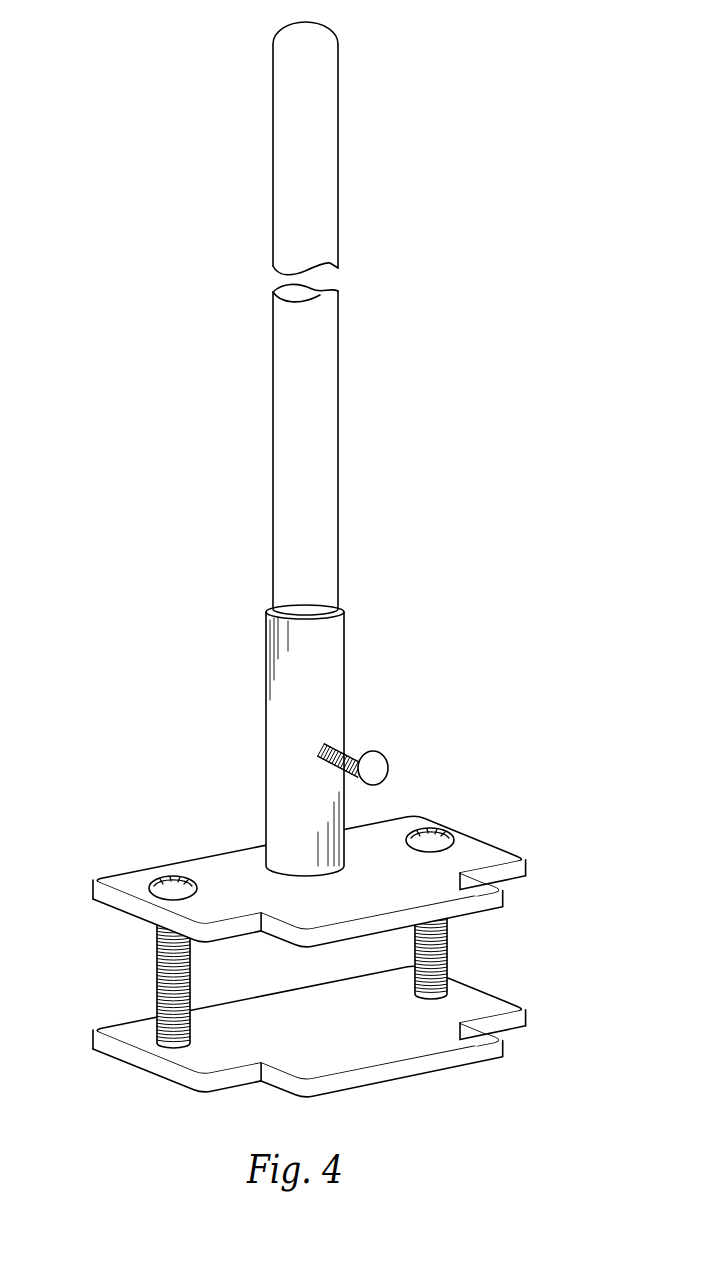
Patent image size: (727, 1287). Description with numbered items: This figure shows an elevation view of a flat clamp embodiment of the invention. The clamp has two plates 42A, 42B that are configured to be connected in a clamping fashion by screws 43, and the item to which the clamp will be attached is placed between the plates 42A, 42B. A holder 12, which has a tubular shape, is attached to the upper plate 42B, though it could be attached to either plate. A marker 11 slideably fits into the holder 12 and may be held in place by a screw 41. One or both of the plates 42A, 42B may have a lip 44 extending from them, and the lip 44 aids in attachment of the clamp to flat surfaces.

The marker 11 is at (327, 378).
The holder 12 is at (280, 763).
The screw 41 is at (378, 770).
The plate 42A is at (473, 998).
The upper plate 42B is at (223, 867).
The screws 43 is at (173, 890).
The lip 44 is at (370, 940).